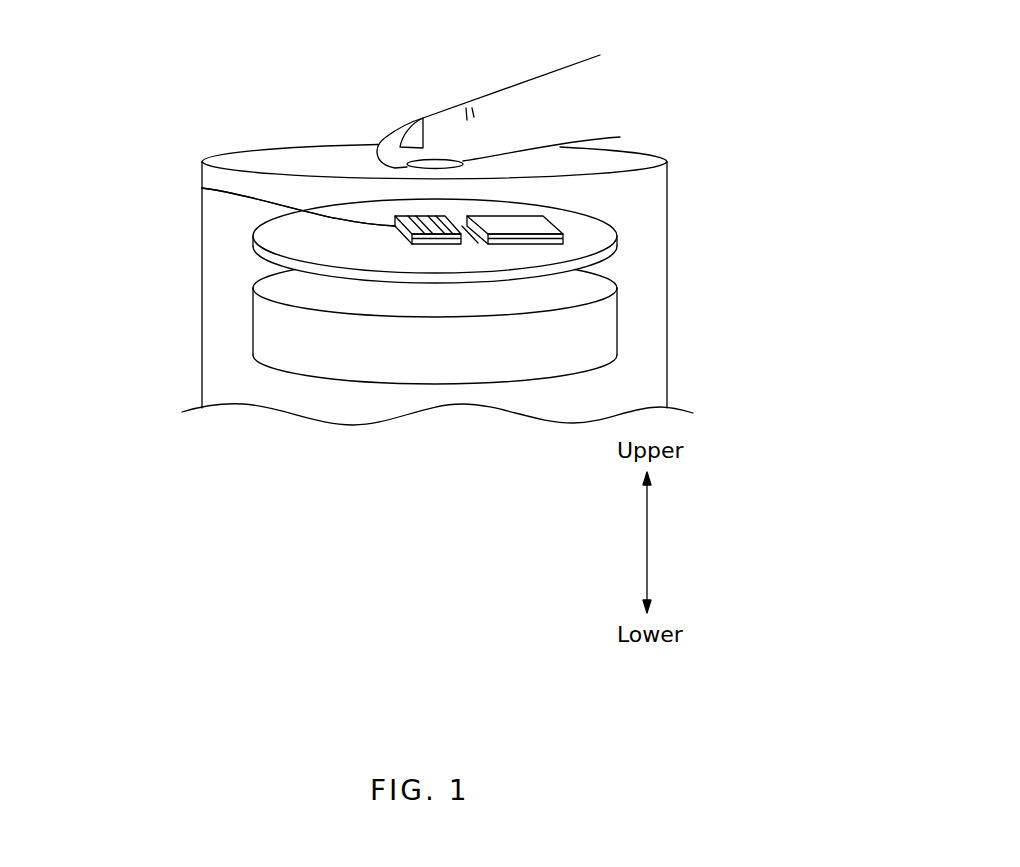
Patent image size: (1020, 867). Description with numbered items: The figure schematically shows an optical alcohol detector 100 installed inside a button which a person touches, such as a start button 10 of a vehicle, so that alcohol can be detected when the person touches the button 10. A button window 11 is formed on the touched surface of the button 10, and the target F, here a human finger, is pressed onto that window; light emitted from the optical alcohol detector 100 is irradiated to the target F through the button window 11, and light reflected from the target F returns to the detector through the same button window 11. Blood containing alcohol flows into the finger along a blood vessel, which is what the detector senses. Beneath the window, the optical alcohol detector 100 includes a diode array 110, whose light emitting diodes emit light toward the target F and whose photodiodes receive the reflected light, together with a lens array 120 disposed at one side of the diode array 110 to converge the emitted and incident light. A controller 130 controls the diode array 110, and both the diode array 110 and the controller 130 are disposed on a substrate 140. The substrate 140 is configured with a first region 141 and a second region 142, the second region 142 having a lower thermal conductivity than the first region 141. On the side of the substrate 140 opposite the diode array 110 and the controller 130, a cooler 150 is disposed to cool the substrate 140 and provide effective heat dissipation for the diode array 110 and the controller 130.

The start button 10 is at (230, 148).
The button window 11 is at (378, 140).
The target F is at (546, 82).
The optical alcohol detector 100 is at (439, 396).
The diode array 110 is at (202, 188).
The lens array 120 is at (298, 207).
The controller 130 is at (559, 237).
The substrate 140 is at (521, 258).
The first region 141 is at (618, 240).
The second region 142 is at (465, 262).
The cooler 150 is at (263, 325).